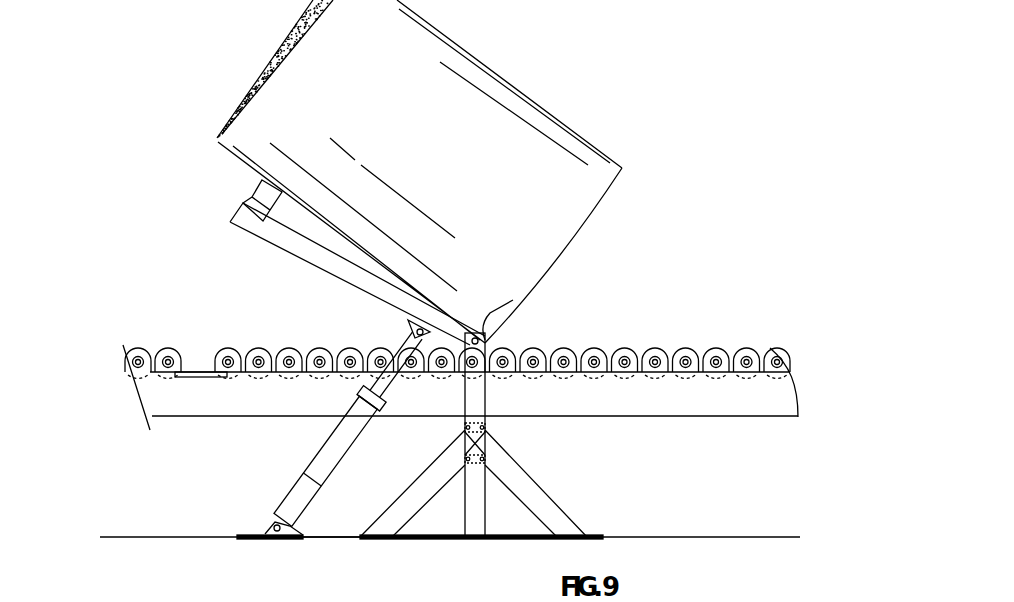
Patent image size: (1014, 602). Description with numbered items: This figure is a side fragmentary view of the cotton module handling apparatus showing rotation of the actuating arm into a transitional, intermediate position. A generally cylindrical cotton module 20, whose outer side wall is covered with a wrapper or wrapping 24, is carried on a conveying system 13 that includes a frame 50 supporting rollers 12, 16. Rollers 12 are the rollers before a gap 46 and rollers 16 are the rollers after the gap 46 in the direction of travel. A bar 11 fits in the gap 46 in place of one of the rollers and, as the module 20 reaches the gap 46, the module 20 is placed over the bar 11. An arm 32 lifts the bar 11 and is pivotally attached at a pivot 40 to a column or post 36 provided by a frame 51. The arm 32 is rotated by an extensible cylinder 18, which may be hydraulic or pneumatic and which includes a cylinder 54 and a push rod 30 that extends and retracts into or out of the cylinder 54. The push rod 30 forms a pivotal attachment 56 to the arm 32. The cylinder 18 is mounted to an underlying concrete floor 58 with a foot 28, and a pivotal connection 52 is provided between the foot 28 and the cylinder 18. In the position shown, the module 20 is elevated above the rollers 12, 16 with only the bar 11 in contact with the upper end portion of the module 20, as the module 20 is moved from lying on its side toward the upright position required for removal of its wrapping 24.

The bar 11 is at (262, 188).
The rollers 12 is at (162, 347).
The conveying system 13 is at (165, 388).
The rollers 16 is at (688, 350).
The extensible cylinder 18 is at (322, 449).
The cotton module 20 is at (560, 115).
The wrapper or wrapping 24 is at (316, 601).
The foot 28 is at (264, 527).
The push rod 30 is at (392, 378).
The arm 32 is at (333, 280).
The column or post 36 is at (478, 395).
The pivot or pivotal attachment 40 is at (513, 300).
The gap 46 is at (199, 358).
The frame 50 is at (557, 417).
The frame 51 is at (531, 477).
The pivotal connection 52 is at (280, 540).
The cylinder 54 is at (345, 460).
The pivotal attachment 56 is at (408, 328).
The concrete floor 58 is at (789, 535).